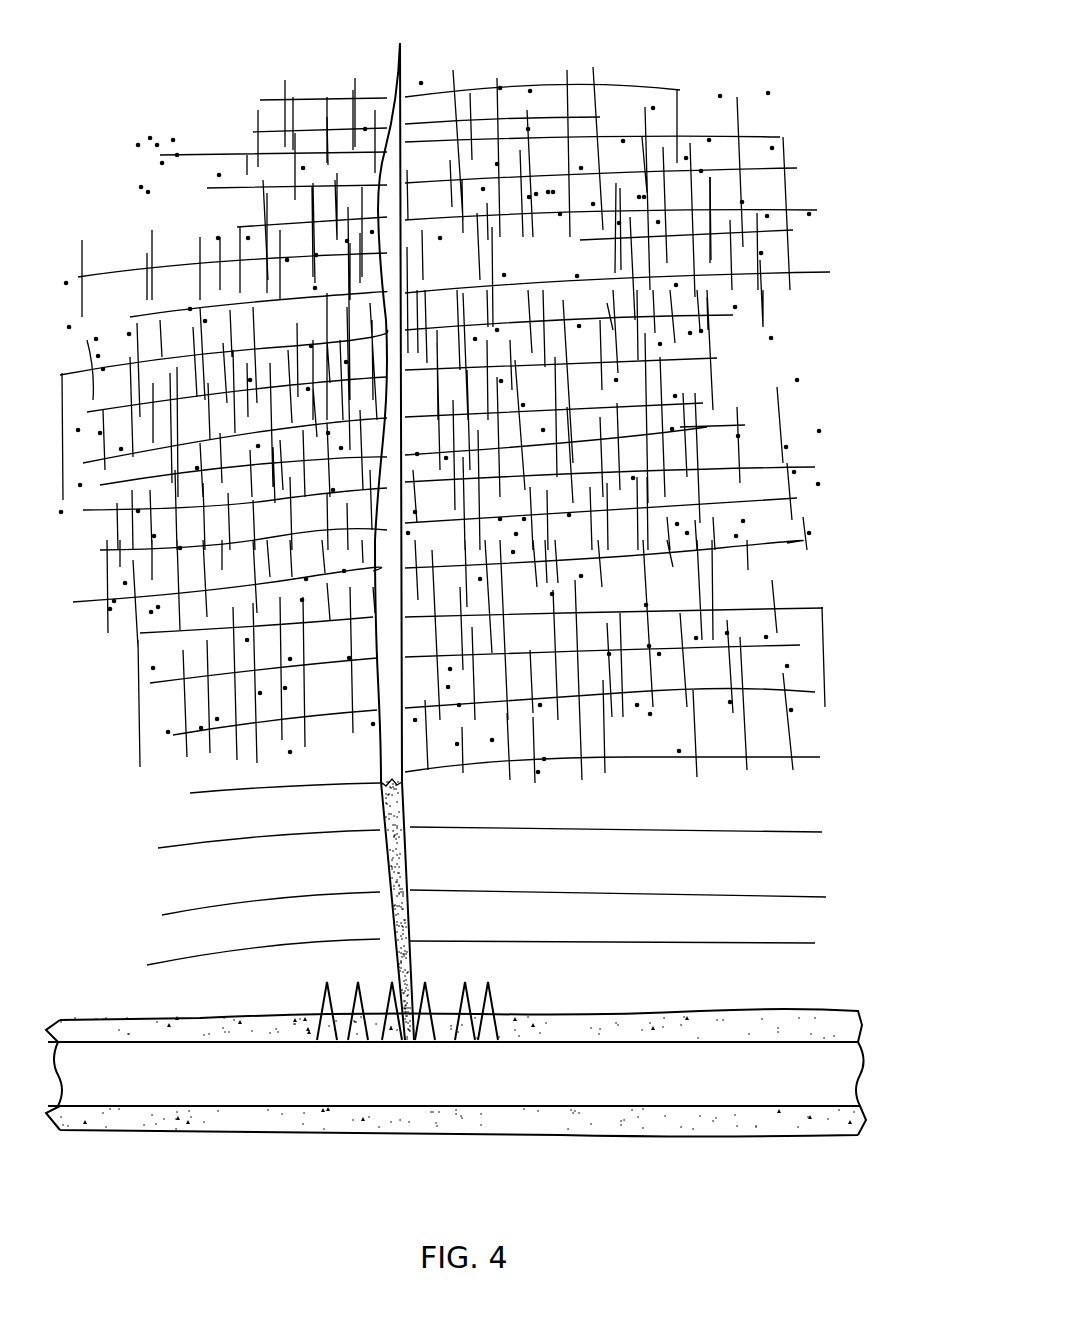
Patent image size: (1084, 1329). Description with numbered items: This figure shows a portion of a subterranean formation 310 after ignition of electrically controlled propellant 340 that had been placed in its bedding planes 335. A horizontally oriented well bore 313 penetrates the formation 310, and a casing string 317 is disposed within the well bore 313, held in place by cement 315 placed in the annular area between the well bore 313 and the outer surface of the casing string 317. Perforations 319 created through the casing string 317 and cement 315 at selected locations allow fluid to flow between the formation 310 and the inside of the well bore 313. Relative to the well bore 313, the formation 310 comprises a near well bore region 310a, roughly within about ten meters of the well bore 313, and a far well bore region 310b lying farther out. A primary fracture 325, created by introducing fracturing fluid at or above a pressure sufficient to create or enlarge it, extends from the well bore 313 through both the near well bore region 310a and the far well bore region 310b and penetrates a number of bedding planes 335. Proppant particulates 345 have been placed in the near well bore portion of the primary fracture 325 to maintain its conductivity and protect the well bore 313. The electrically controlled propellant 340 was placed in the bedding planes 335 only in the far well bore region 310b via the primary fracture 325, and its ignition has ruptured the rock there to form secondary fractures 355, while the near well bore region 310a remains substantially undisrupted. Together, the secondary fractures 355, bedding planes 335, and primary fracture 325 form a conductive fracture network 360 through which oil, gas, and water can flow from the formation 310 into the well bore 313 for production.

The subterranean formation 310 is at (790, 58).
The near well bore region 310a is at (862, 1007).
The far well bore region 310b is at (862, 778).
The well bore 313 is at (583, 1010).
The cement 315 is at (678, 1027).
The casing string 317 is at (720, 1043).
The perforations 319 is at (390, 990).
The primary fracture 325 is at (383, 319).
The bedding planes 335 is at (247, 170).
The electrically controlled propellant 340 is at (710, 177).
The proppant particulates 345 is at (380, 797).
The secondary fractures 355 is at (353, 90).
The conductive fracture network 360 is at (186, 90).